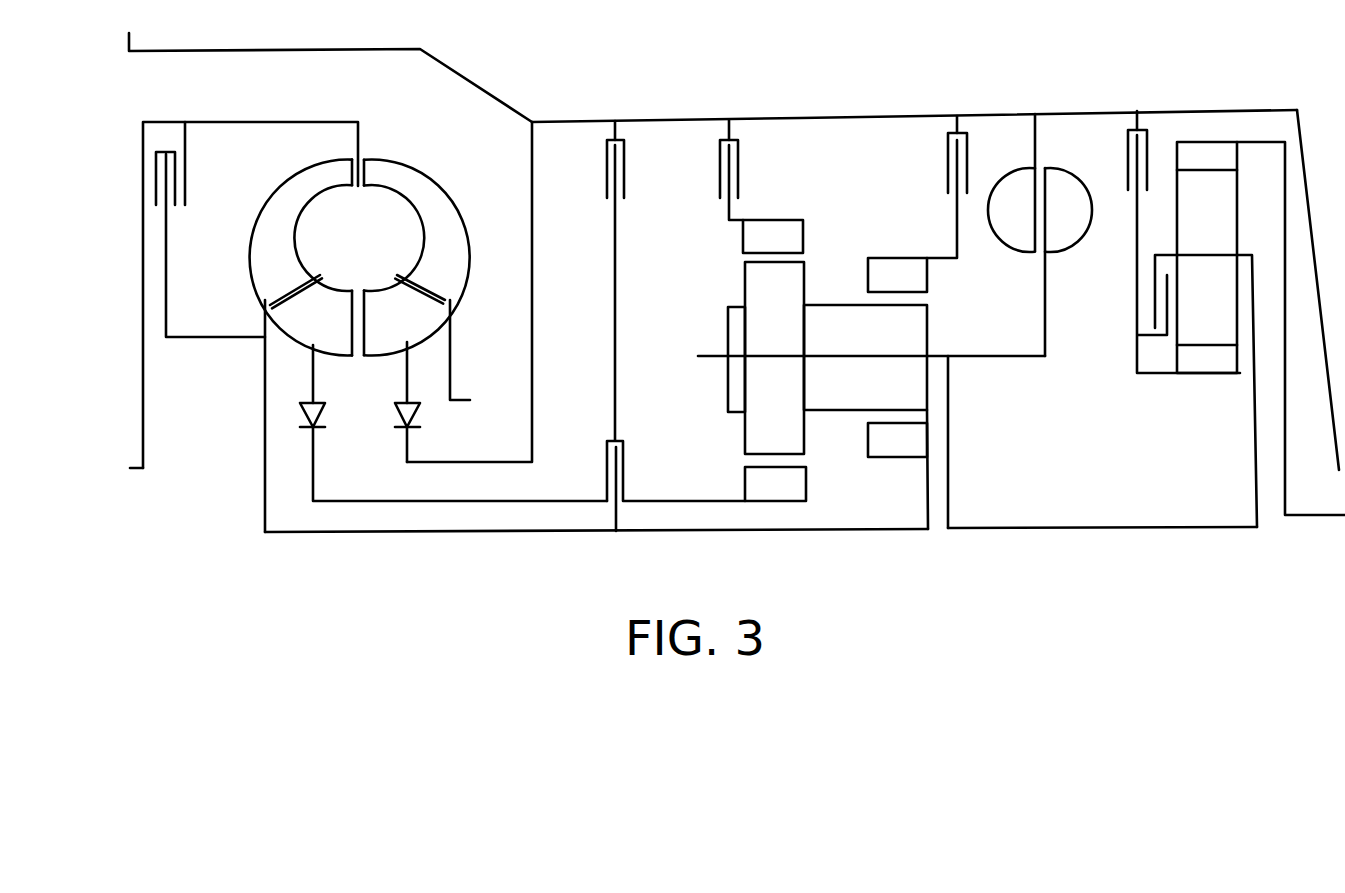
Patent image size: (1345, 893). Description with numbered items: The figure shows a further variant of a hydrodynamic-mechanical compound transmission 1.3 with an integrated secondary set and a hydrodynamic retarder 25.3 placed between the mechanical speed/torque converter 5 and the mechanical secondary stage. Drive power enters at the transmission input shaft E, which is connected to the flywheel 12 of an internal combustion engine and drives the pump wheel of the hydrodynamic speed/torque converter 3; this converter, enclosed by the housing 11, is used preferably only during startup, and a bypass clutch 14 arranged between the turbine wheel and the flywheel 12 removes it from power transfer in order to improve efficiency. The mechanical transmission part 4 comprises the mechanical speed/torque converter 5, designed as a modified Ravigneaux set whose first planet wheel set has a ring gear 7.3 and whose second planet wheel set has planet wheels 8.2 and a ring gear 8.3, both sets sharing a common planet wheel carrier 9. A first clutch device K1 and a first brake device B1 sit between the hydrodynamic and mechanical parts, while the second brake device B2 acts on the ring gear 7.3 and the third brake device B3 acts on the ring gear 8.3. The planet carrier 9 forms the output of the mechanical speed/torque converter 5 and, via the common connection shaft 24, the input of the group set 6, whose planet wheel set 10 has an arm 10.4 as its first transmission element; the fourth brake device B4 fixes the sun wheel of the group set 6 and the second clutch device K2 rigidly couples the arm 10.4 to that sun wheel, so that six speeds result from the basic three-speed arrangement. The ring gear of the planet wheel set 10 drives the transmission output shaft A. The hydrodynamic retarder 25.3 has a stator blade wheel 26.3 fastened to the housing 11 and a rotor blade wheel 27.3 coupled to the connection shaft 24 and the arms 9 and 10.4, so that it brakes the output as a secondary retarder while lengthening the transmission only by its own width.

The hydrodynamic-mechanical compound transmission 1.3 is at (833, 87).
The hydrodynamic speed/torque converter 3 is at (402, 161).
The mechanical transmission part 4 is at (883, 107).
The mechanical speed/torque converter 5 is at (726, 290).
The group set 6 is at (1209, 116).
The ring gear 7.3 is at (765, 213).
The planet wheels 8.2 is at (871, 357).
The ring gear 8.3 is at (890, 255).
The planet wheel carrier 9 is at (948, 499).
The planet wheel set 10 is at (1270, 125).
The arm 10.4 is at (1261, 507).
The housing 11 is at (472, 79).
The flywheel 12 is at (143, 147).
The bypass clutch 14 is at (152, 192).
The connection shaft 24 is at (1172, 528).
The hydrodynamic retarder 25.3 is at (1043, 148).
The stator blade wheel 26.3 is at (1013, 233).
The rotor blade wheel 27.3 is at (1060, 187).
The first brake device B1 is at (616, 259).
The second brake device B2 is at (731, 149).
The third brake device B3 is at (950, 166).
The fourth brake device B4 is at (1182, 220).
The first clutch device K1 is at (625, 462).
The second clutch device K2 is at (1162, 336).
The transmission input shaft E is at (125, 471).
The transmission output shaft A is at (1294, 513).